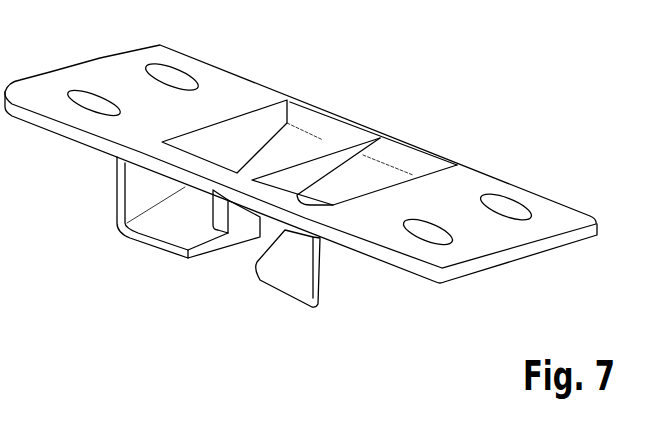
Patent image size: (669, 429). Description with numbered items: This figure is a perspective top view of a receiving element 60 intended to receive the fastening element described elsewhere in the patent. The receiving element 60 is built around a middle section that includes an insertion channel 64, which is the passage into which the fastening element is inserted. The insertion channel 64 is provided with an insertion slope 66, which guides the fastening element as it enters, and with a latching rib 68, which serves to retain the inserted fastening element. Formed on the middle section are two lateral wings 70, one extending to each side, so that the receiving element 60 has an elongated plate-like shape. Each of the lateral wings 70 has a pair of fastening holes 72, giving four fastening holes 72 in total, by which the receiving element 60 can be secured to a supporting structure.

The receiving element 60 is at (301, 176).
The insertion channel 64 is at (201, 254).
The insertion slope 66 is at (162, 229).
The latching rib 68 is at (222, 213).
The lateral wings 70 is at (242, 92).
The fastening holes 72 is at (89, 103).